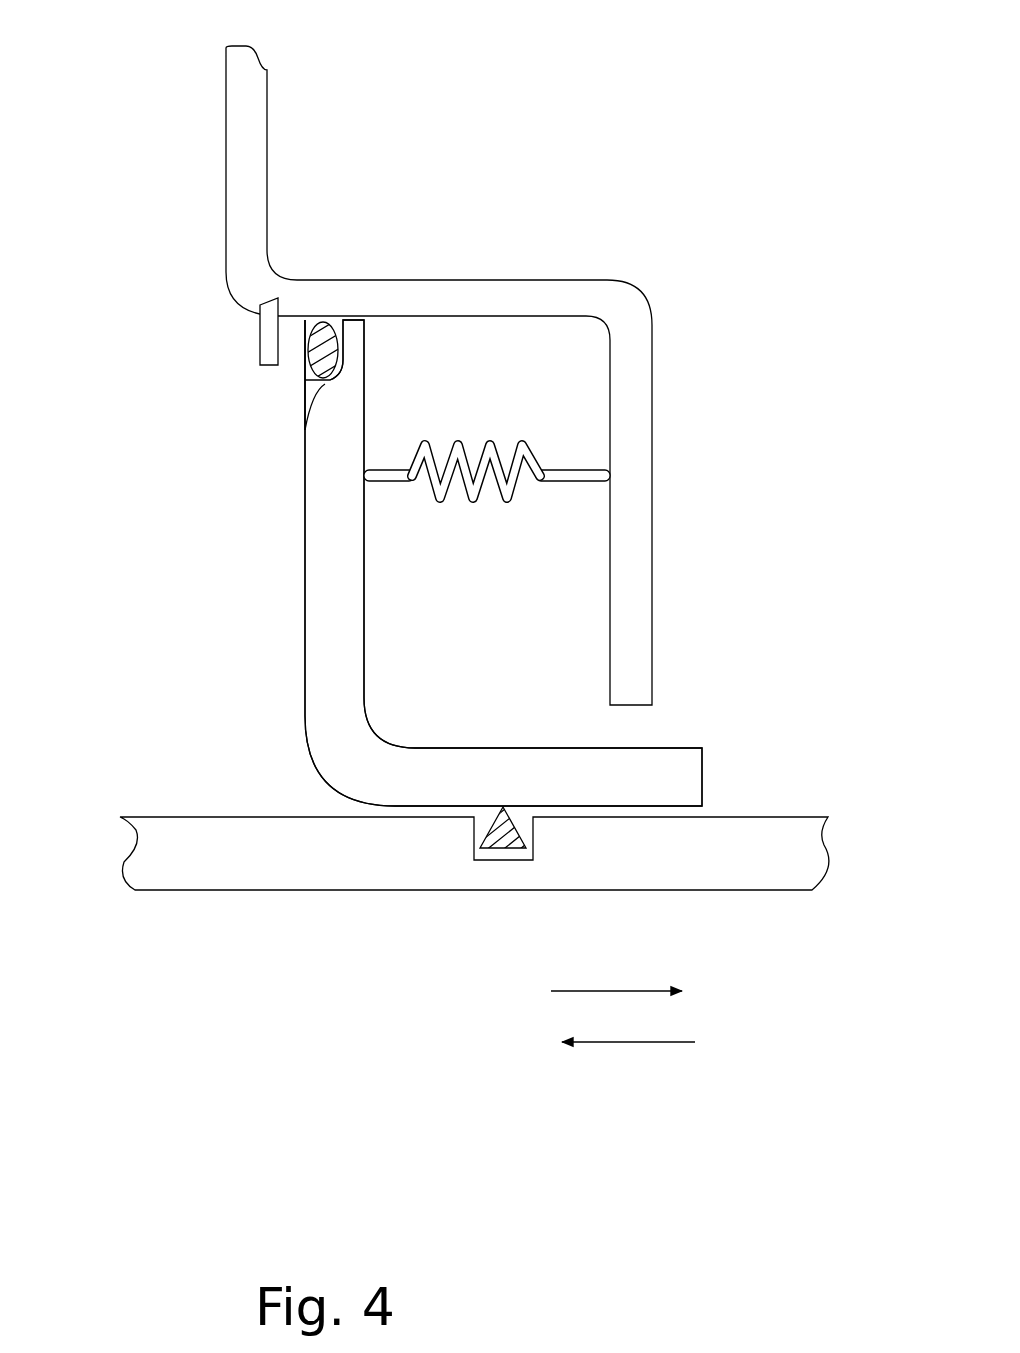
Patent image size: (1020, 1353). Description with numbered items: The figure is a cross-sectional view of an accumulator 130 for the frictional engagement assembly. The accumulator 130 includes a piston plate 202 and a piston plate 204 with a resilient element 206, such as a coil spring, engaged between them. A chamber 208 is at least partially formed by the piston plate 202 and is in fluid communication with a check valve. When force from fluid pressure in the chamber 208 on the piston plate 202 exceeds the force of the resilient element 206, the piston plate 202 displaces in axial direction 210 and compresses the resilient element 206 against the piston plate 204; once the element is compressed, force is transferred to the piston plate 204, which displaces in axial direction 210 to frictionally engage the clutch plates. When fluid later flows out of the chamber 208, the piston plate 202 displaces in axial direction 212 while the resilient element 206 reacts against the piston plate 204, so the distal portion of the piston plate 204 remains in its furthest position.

The accumulator 130 is at (642, 113).
The piston plate 202 is at (326, 620).
The piston plate 204 is at (617, 297).
The resilient element 206 is at (472, 500).
The chamber 208 is at (208, 505).
The axial direction 210 is at (608, 991).
The axial direction 212 is at (624, 1042).